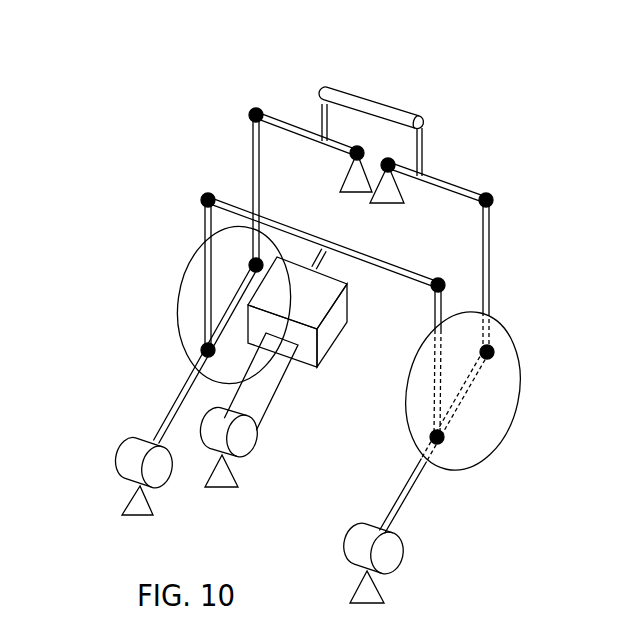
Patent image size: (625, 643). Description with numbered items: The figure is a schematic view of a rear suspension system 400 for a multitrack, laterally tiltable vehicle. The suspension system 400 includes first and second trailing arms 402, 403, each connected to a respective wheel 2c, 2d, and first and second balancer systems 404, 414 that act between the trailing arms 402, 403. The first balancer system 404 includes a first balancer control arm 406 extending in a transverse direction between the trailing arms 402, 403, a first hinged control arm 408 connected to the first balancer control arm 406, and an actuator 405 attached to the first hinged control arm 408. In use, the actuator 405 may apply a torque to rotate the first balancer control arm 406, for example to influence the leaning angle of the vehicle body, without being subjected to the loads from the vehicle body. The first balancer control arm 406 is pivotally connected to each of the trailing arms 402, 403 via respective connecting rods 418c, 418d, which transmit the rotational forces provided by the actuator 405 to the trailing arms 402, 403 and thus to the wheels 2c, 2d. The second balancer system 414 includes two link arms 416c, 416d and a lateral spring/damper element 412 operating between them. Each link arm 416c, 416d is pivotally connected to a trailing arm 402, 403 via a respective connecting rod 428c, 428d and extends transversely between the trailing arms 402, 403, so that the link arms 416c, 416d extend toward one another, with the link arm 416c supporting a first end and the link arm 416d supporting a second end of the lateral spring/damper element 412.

The suspension system 400 is at (113, 175).
The first trailing arm 402 is at (166, 402).
The second trailing arm 403 is at (410, 494).
The first balancer system 404 is at (320, 405).
The actuator 405 is at (329, 344).
The first balancer control arm 406 is at (366, 251).
The first hinged control arm 408 is at (262, 398).
The lateral spring/damper element 412 is at (409, 112).
The second balancer system 414 is at (395, 77).
The link arm 416c is at (285, 119).
The link arm 416d is at (446, 180).
The connecting rod 418c is at (205, 228).
The connecting rod 418d is at (410, 364).
The connecting rod 428c is at (254, 154).
The connecting rod 428d is at (492, 224).
The wheel 2c is at (180, 291).
The wheel 2d is at (520, 341).